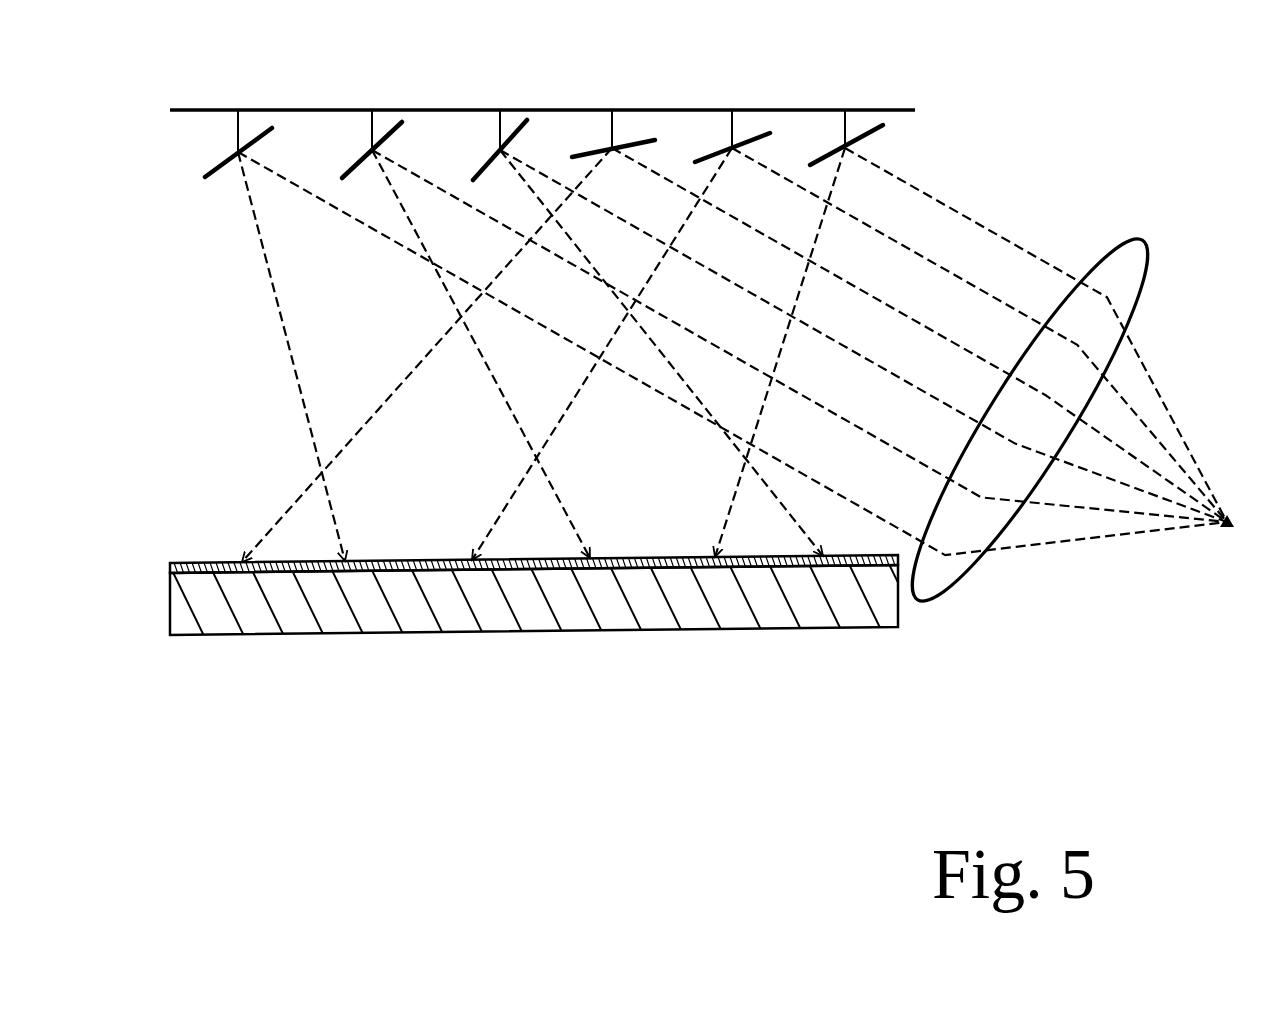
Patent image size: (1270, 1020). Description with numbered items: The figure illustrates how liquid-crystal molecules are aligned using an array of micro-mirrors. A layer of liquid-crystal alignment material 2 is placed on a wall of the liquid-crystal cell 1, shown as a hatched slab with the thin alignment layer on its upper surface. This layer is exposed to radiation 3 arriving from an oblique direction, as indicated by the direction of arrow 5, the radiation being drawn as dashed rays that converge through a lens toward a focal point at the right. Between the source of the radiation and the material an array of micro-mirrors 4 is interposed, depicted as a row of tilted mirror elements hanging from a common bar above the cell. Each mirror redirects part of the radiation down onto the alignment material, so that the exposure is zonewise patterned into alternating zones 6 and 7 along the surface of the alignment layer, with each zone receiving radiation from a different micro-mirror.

The wall of the liquid-crystal cell 1 is at (842, 595).
The layer of liquid-crystal alignment material 2 is at (853, 557).
The radiation 3 is at (1030, 419).
The array of micro-mirrors 4 is at (817, 110).
The arrow 5 is at (585, 572).
The zone 6 is at (240, 573).
The zone 7 is at (345, 573).